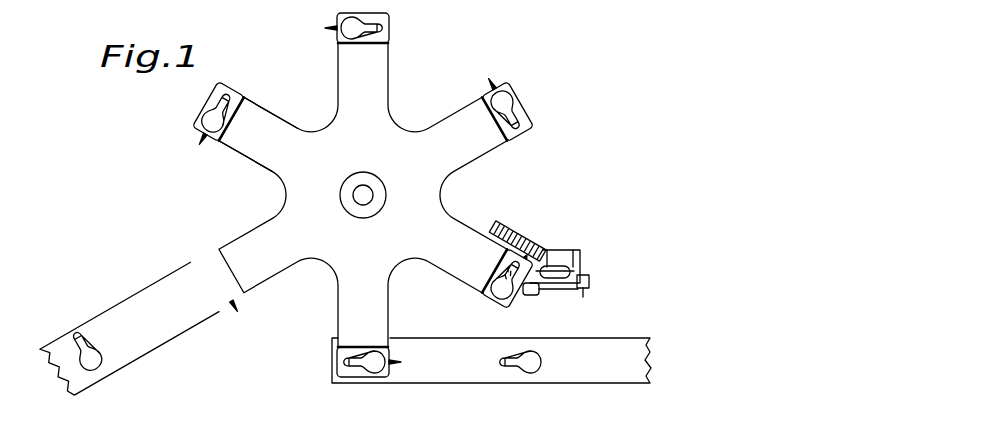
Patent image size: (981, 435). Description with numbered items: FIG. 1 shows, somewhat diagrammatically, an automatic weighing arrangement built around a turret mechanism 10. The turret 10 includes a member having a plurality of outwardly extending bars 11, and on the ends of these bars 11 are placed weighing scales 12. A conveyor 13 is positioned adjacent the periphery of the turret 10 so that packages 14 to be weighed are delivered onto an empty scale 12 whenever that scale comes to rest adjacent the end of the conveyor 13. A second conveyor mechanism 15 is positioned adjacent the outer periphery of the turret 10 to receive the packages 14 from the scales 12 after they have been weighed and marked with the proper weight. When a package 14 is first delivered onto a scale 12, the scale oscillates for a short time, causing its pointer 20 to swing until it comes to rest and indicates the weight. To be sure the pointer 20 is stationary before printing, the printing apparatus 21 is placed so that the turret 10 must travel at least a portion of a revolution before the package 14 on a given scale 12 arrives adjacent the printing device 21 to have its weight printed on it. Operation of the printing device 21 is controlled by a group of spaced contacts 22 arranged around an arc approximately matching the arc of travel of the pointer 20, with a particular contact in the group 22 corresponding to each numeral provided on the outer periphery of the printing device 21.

The turret mechanism 10 is at (397, 118).
The outwardly extending bars 11 is at (288, 118).
The weighing scales 12 is at (243, 94).
The conveyor 13 is at (149, 285).
The packages 14 is at (79, 334).
The second conveyor mechanism 15 is at (457, 383).
The pointer 20 is at (236, 303).
The printing apparatus 21 is at (584, 271).
The group of spaced contacts 22 is at (516, 231).